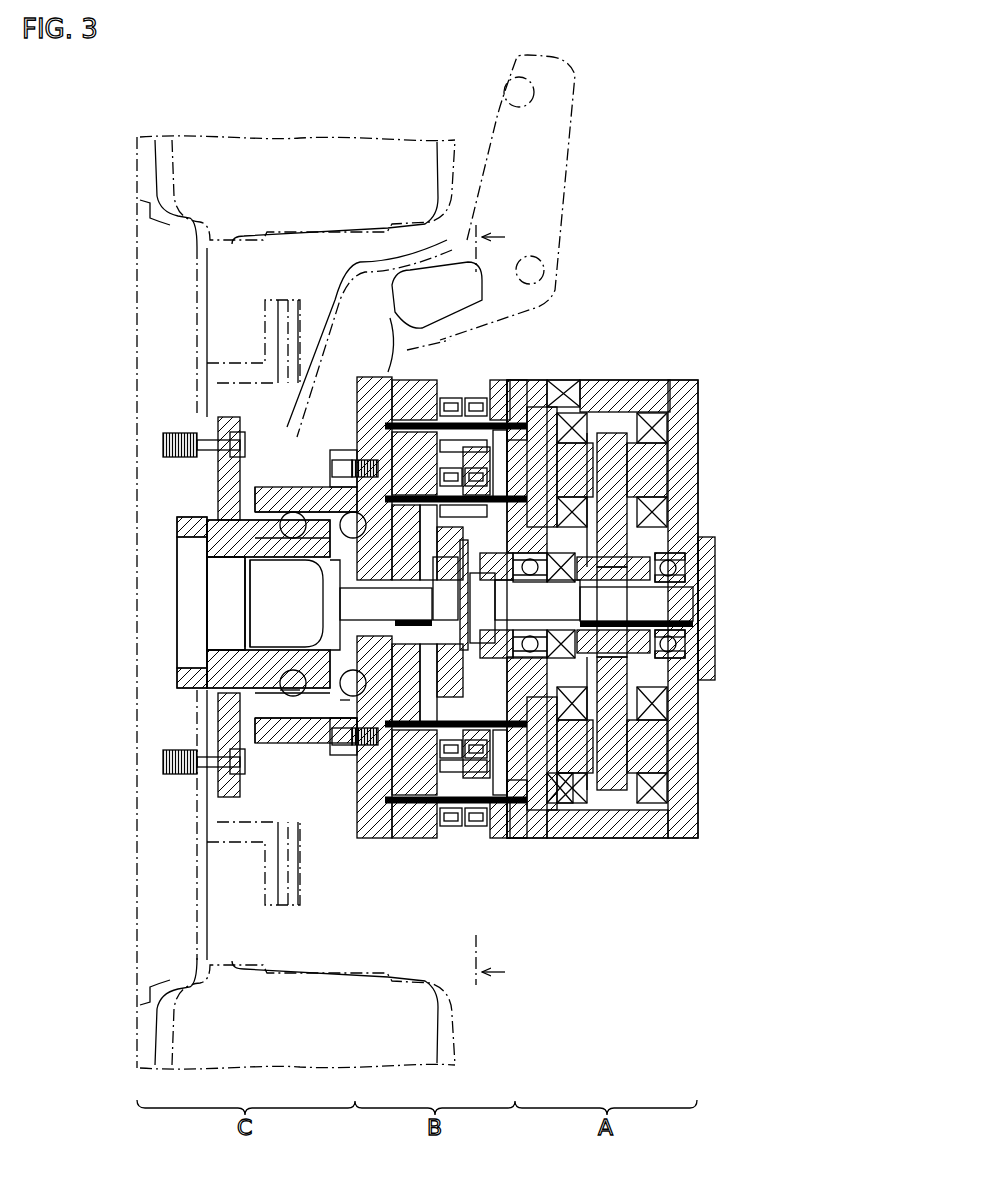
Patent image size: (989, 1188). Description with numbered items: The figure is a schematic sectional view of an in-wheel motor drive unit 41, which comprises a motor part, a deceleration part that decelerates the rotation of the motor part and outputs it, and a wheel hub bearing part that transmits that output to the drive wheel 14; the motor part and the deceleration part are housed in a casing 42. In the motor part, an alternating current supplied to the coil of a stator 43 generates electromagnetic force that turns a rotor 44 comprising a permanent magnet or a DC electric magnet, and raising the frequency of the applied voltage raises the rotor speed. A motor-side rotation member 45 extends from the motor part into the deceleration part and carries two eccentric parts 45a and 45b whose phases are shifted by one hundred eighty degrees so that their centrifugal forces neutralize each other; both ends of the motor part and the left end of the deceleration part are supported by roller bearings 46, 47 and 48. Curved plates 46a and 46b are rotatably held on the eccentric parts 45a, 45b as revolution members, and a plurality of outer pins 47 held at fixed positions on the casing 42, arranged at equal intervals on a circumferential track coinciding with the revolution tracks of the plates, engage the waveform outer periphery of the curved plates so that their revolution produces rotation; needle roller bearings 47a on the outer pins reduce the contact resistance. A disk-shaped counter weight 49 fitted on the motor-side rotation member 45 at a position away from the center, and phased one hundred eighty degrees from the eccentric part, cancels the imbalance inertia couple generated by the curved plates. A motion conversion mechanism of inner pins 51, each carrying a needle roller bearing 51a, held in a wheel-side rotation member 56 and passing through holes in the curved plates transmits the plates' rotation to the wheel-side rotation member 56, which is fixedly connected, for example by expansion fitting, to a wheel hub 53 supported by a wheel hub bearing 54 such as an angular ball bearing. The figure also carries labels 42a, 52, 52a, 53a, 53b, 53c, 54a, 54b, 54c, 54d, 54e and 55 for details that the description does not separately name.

The drive wheel 14 is at (150, 388).
The in-wheel motor drive unit 41 is at (121, 124).
The casing 42 is at (683, 425).
The housing flange 42a is at (285, 500).
The stator 43 is at (615, 805).
The rotor 44 is at (612, 745).
The motor-side rotation member 45 is at (678, 604).
The eccentric part 45a is at (484, 608).
The eccentric part 45b is at (450, 595).
The roller bearing 46 is at (672, 640).
The curved plate 46a is at (545, 750).
The curved plate 46b is at (372, 440).
The outer pin 47 is at (398, 410).
The needle roller bearing 47a is at (455, 400).
The roller bearing 48 is at (230, 586).
The counter weight 49 is at (175, 668).
The inner pin 51 is at (520, 495).
The needle roller bearing 51a is at (498, 470).
The stator core 52 is at (580, 805).
The stator yoke 52a is at (458, 420).
The wheel hub 53 is at (192, 517).
The hub cylinder 53a is at (190, 555).
The hub bolt shank 53b is at (225, 477).
The hub bolt 53c is at (193, 438).
The wheel hub bearing 54 is at (325, 492).
The fastening bolt 54a is at (330, 517).
The inner ring upper 54b is at (210, 531).
The outer ring lower 54c is at (345, 700).
The bearing ball lower 54d is at (298, 690).
The inner ring lower 54e is at (270, 697).
The hub bore 55 is at (250, 612).
The wheel-side rotation member 56 is at (270, 628).